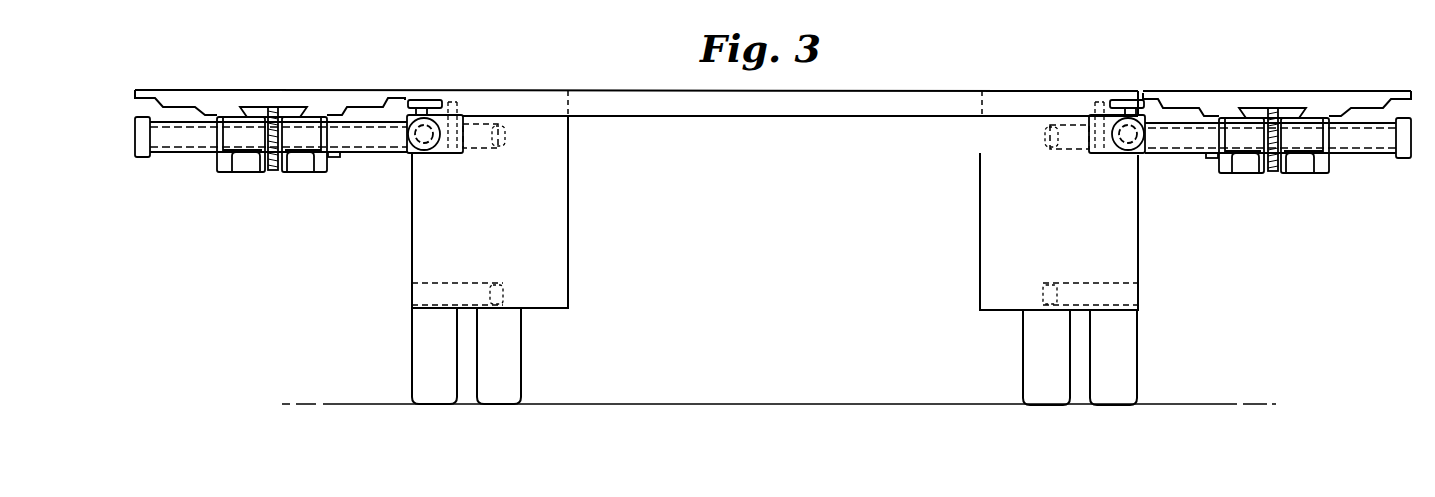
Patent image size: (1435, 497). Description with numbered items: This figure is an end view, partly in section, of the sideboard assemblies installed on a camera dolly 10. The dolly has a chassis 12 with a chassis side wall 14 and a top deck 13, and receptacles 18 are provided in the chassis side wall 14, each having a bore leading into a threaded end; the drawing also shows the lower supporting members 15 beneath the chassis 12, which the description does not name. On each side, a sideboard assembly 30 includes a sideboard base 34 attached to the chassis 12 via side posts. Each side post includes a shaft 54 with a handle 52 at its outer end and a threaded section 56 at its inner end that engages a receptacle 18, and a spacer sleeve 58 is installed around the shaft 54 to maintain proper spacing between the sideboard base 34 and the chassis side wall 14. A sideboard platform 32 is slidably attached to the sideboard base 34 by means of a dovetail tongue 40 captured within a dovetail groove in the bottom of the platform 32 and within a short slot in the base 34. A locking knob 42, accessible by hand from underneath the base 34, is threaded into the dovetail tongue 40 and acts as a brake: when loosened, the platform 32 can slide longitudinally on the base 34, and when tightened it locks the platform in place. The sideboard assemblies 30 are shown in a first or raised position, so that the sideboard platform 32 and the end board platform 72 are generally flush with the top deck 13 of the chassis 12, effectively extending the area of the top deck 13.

The camera dolly 10 is at (978, 172).
The chassis 12 is at (547, 188).
The top deck 13 is at (1030, 90).
The chassis side wall 14 is at (412, 222).
The legs 15 is at (445, 358).
The receptacles 18 is at (492, 150).
The sideboard assembly 30 is at (257, 72).
The sideboard platform 32 is at (317, 93).
The sideboard base 34 is at (313, 167).
The dovetail tongue 40 is at (248, 109).
The locking knob 42 is at (257, 167).
The handle 52 is at (143, 158).
The shaft 54 is at (378, 137).
The threaded section 56 is at (1053, 150).
The spacer sleeve 58 is at (366, 120).
The end board platform 72 is at (807, 113).